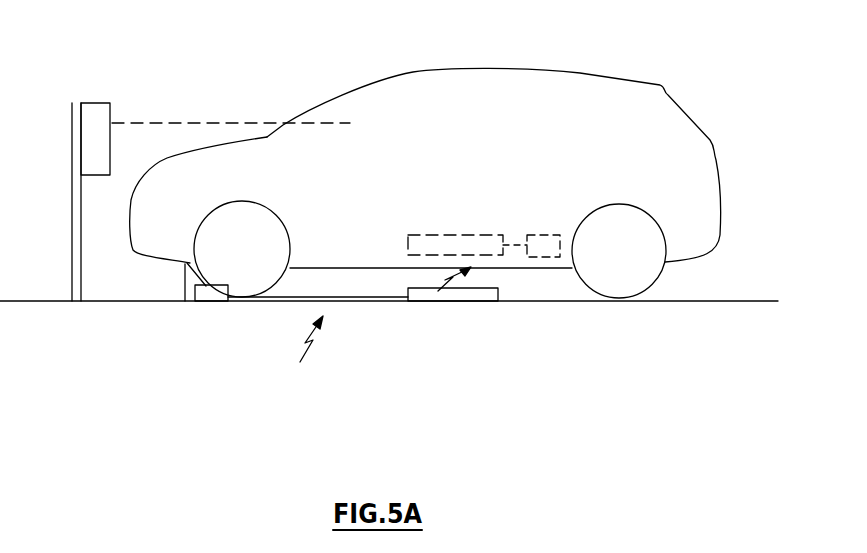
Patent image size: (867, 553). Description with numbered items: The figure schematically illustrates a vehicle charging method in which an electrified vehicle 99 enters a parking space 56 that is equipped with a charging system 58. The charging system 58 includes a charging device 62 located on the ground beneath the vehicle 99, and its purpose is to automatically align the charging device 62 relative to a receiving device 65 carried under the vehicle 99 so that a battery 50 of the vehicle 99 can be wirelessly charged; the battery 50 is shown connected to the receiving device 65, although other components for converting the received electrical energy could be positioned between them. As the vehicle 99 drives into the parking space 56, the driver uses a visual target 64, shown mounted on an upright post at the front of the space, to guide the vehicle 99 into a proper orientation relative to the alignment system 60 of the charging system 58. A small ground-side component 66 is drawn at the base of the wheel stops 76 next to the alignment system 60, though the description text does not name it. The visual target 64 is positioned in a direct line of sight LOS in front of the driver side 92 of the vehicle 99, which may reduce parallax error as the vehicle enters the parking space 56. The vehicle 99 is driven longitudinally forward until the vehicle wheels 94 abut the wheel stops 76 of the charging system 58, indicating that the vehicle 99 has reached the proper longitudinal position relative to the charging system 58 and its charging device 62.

The battery 50 is at (527, 246).
The parking space 56 is at (704, 288).
The charging system 58 is at (364, 332).
The alignment system 60 is at (228, 316).
The charging device 62 is at (465, 314).
The visual target 64 is at (93, 103).
The receiving device 65 is at (404, 245).
The ground sensor box 66 is at (211, 293).
The wheel stops 76 is at (185, 283).
The driver side 92 is at (406, 110).
The vehicle wheels 94 is at (270, 270).
The vehicle 99 is at (486, 73).
The line of sight LOS is at (222, 123).